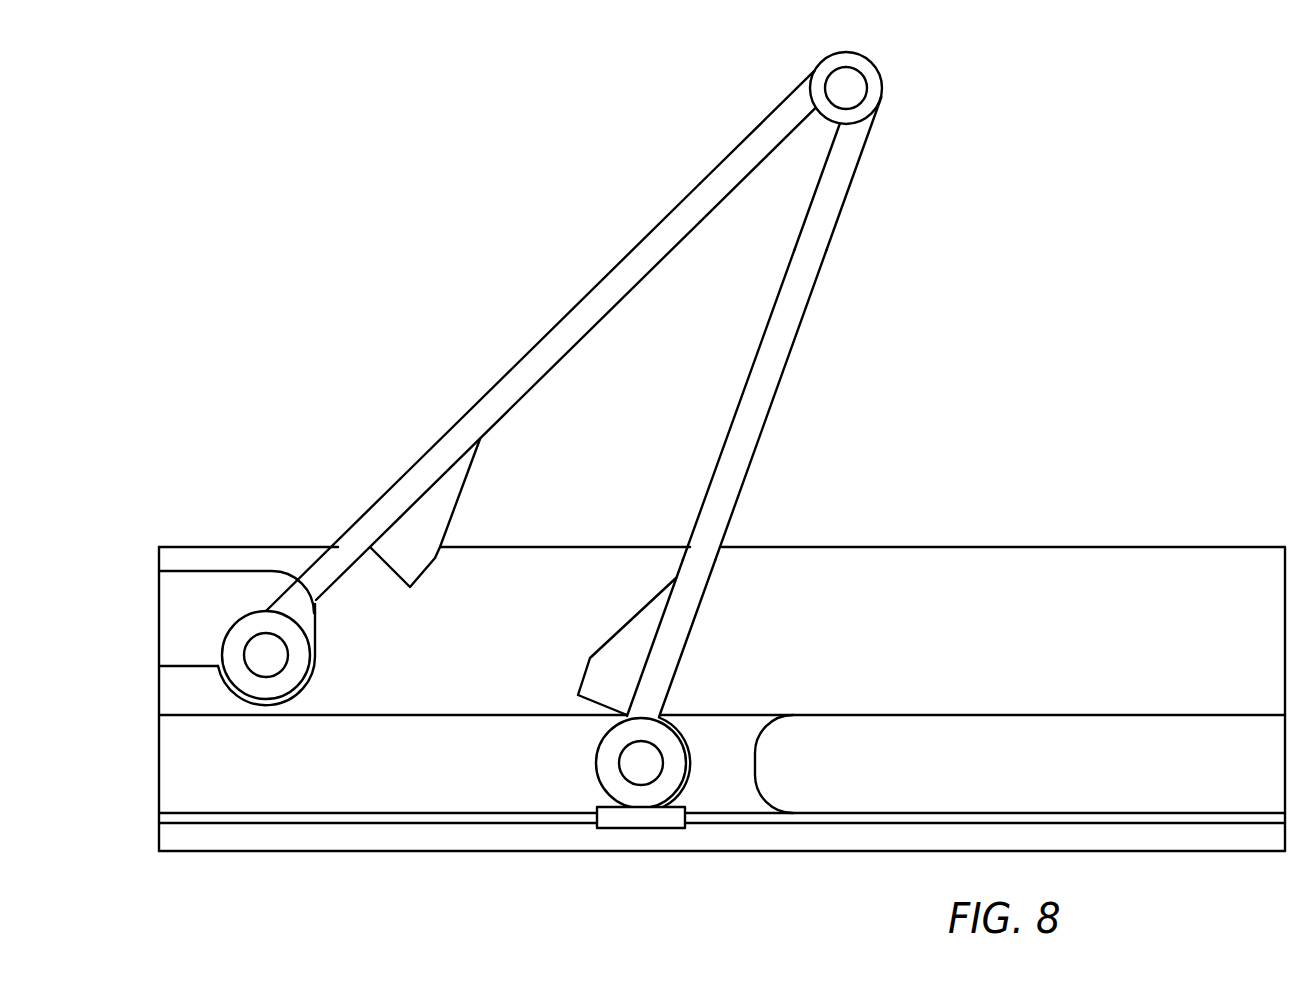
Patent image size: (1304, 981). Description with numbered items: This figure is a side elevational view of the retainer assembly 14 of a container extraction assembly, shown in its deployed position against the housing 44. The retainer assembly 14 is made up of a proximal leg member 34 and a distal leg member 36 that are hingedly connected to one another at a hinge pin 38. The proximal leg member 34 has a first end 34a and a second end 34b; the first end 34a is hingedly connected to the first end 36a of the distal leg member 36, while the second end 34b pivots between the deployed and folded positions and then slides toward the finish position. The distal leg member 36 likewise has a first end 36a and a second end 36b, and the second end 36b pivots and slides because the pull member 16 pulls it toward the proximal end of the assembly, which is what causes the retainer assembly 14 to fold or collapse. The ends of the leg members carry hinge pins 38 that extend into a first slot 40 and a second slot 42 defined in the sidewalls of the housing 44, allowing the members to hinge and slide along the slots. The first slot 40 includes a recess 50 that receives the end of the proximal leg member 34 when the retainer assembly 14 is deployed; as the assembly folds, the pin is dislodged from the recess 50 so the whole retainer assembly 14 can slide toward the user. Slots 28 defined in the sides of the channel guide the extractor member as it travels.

The retainer assembly 14 is at (975, 188).
The pull member 16 is at (363, 825).
The slots 28 is at (1065, 780).
The proximal leg member 34 is at (541, 336).
The first end of proximal leg member 34a is at (803, 106).
The second end of proximal leg member 34b is at (222, 637).
The distal leg member 36 is at (755, 412).
The first end of distal leg member 36a is at (877, 89).
The second end of distal leg member 36b is at (670, 778).
The hinge pin 38 is at (846, 88).
The first slot 40 is at (175, 648).
The second slot 42 is at (410, 780).
The housing 44 is at (1030, 562).
The recess 50 is at (245, 700).